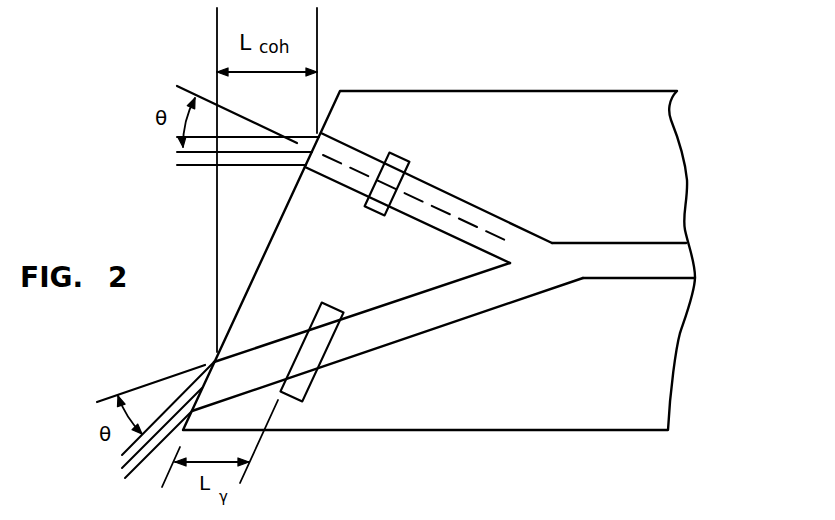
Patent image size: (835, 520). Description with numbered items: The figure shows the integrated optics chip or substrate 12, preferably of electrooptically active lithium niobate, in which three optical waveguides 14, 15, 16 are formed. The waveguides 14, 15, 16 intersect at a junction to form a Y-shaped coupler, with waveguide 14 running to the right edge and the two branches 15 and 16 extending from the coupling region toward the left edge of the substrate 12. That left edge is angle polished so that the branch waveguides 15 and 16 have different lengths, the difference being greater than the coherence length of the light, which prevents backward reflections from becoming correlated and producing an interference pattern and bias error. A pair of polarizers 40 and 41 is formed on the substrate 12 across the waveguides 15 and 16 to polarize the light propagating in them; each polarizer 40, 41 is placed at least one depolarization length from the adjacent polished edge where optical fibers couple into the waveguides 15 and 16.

The substrate 12 is at (493, 91).
The optical waveguide 14 is at (618, 282).
The optical waveguide 15 is at (464, 320).
The optical waveguide 16 is at (473, 205).
The polarizer 40 is at (312, 382).
The polarizer 41 is at (403, 157).